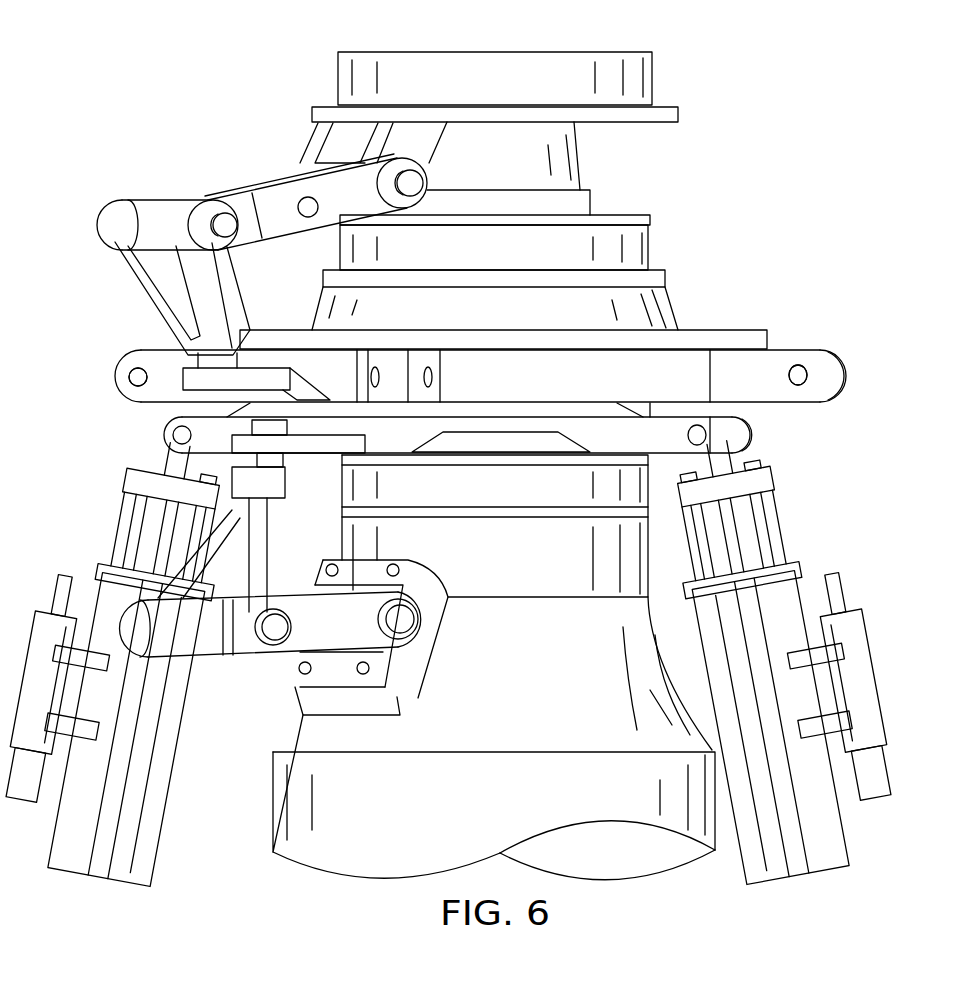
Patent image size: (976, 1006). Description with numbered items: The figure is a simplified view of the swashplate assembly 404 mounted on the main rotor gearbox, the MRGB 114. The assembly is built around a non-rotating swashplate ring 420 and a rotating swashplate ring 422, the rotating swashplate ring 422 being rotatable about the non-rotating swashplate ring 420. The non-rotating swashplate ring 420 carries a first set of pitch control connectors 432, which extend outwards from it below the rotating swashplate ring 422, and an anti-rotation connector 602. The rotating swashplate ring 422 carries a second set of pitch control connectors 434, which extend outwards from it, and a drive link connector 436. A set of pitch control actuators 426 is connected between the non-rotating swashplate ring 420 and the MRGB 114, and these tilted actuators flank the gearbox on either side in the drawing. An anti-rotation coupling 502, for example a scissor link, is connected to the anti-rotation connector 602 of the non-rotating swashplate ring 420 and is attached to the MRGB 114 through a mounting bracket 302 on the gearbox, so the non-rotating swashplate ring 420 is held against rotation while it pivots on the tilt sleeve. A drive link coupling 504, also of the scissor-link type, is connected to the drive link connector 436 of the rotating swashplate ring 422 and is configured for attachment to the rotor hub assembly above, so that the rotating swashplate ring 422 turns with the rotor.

The MRGB 114 is at (273, 805).
The mounting bracket 302 is at (340, 685).
The swashplate assembly 404 is at (720, 186).
The non-rotating swashplate ring 420 is at (480, 343).
The rotating swashplate ring 422 is at (672, 365).
The pitch control actuators 426 is at (133, 885).
The first set of pitch control connectors 432 is at (747, 427).
The second set of pitch control connectors 434 is at (115, 376).
The drive link connector 436 is at (193, 380).
The anti-rotation coupling 502 is at (262, 660).
The drive link coupling 504 is at (198, 182).
The anti-rotation connector 602 is at (242, 445).